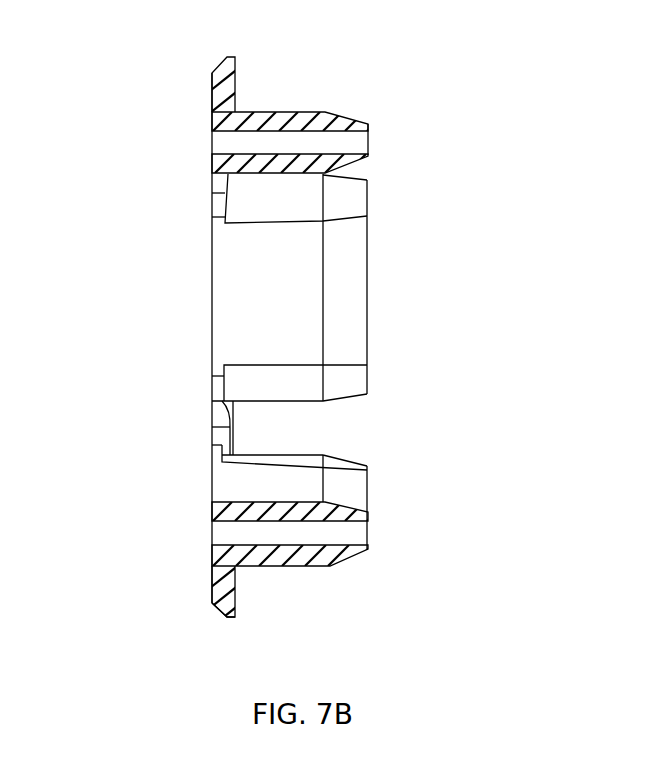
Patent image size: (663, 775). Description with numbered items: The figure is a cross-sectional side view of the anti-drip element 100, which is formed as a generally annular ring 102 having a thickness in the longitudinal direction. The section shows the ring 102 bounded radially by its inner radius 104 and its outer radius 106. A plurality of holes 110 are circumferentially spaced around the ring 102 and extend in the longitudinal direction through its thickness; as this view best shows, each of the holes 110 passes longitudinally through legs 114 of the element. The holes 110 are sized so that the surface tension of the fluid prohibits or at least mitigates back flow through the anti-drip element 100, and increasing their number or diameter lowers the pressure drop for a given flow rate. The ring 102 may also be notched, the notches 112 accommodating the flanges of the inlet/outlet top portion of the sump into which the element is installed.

The anti-drip element 100 is at (110, 158).
The annular ring 102 is at (213, 562).
The inner radius 104 is at (223, 504).
The outer radius 106 is at (228, 617).
The holes 110 is at (344, 158).
The notches 112 is at (213, 444).
The legs 114 is at (342, 114).